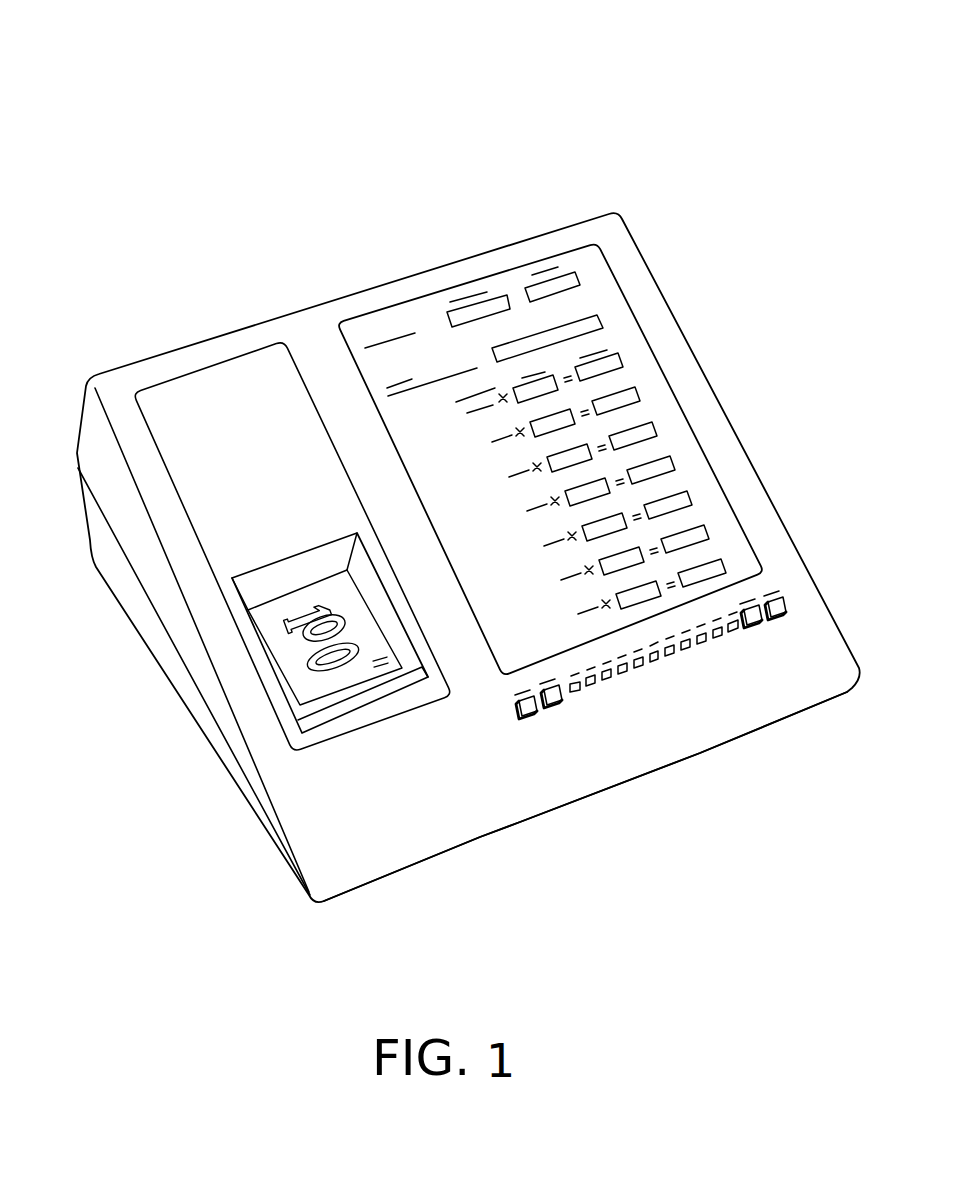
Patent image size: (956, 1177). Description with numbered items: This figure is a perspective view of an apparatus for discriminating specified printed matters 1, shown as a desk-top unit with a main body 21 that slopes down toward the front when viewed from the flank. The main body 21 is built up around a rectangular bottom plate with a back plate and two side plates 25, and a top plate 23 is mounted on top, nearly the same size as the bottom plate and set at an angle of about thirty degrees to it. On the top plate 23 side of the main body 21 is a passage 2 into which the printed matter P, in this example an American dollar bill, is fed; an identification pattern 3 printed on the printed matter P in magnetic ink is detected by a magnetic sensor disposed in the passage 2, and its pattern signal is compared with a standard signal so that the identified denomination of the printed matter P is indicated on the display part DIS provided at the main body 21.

The apparatus for discriminating specified printed matters 1 is at (369, 165).
The main body 21 is at (216, 305).
The top plate 23 is at (482, 822).
The side plates 25 is at (122, 575).
The passage 2 is at (304, 594).
The identification pattern 3 is at (283, 658).
The printed matter P is at (300, 690).
The display part DIS is at (693, 379).